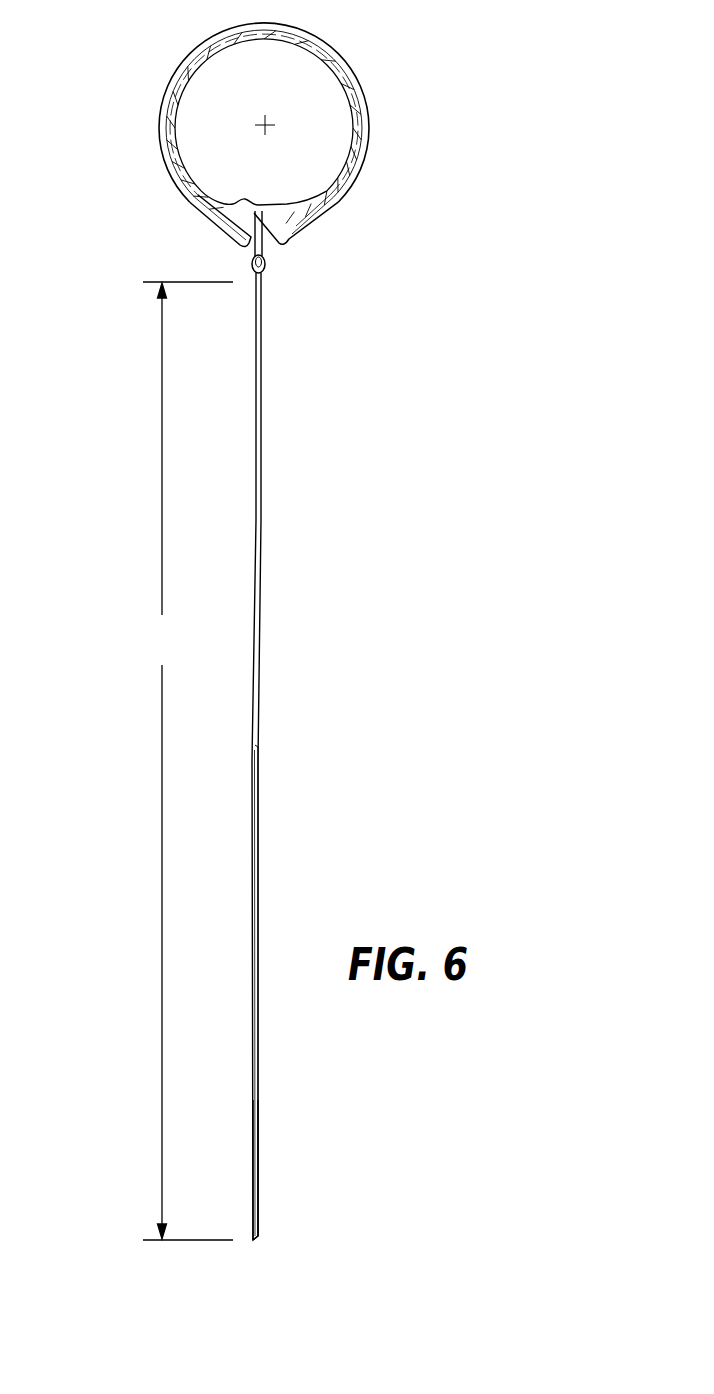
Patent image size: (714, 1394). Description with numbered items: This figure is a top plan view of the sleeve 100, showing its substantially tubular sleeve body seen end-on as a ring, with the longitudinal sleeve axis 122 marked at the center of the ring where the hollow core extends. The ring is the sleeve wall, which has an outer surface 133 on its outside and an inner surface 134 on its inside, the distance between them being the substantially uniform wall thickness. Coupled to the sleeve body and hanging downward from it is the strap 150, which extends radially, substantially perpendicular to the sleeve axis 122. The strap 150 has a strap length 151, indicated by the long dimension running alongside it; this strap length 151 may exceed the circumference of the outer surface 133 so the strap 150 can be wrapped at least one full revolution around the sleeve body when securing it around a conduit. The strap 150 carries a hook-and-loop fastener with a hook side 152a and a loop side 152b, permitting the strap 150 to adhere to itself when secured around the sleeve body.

The sleeve 100 is at (133, 59).
The longitudinal sleeve axis 122 is at (267, 130).
The outer surface 133 is at (323, 41).
The inner surface 134 is at (211, 197).
The strap 150 is at (260, 547).
The strap length 151 is at (187, 761).
The hook side 152a is at (251, 819).
The loop side 152b is at (258, 1136).